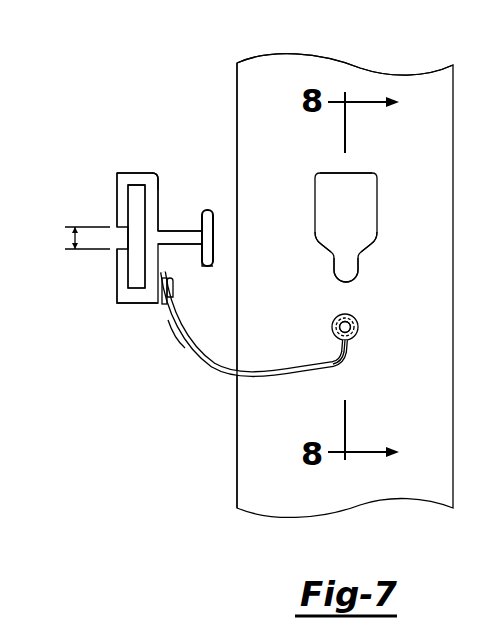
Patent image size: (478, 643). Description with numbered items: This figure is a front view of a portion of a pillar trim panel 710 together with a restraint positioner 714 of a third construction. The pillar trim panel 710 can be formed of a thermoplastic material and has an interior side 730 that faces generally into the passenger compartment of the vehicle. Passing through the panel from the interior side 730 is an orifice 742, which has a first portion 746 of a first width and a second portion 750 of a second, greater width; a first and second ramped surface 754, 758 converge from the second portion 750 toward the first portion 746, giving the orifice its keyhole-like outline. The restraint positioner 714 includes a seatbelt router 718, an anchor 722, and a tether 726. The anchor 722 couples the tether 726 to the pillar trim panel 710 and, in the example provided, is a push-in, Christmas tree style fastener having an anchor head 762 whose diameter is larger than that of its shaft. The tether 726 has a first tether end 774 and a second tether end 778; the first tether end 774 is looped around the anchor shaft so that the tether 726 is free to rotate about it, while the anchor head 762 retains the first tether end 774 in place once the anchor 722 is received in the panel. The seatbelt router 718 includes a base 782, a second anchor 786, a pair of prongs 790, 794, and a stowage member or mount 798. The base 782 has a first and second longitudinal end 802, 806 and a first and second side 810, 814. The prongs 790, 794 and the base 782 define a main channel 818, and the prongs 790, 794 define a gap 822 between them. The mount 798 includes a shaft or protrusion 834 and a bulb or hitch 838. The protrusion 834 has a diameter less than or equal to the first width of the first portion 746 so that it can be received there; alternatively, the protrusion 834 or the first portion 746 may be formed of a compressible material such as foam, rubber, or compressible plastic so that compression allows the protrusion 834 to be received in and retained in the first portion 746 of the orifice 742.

The pillar trim panel 710 is at (430, 87).
The restraint positioner 714 is at (215, 106).
The seatbelt router 718 is at (117, 173).
The anchor 722 is at (357, 318).
The tether 726 is at (248, 382).
The interior side 730 is at (400, 88).
The orifice 742 is at (333, 172).
The first portion 746 is at (361, 258).
The second portion 750 is at (378, 216).
The first ramped surface 754 is at (363, 245).
The second ramped surface 758 is at (330, 245).
The anchor head 762 is at (333, 323).
The first tether end 774 is at (348, 363).
The second tether end 778 is at (173, 334).
The base 782 is at (159, 178).
The second anchor 786 is at (178, 280).
The prong 790 is at (117, 290).
The prong 794 is at (115, 198).
The mount 798 is at (214, 216).
The first longitudinal end 802 is at (158, 304).
The second longitudinal end 806 is at (153, 172).
The first side 810 is at (143, 264).
The second side 814 is at (160, 193).
The main channel 818 is at (134, 185).
The gap 822 is at (73, 238).
The protrusion 834 is at (180, 229).
The bulb 838 is at (207, 268).